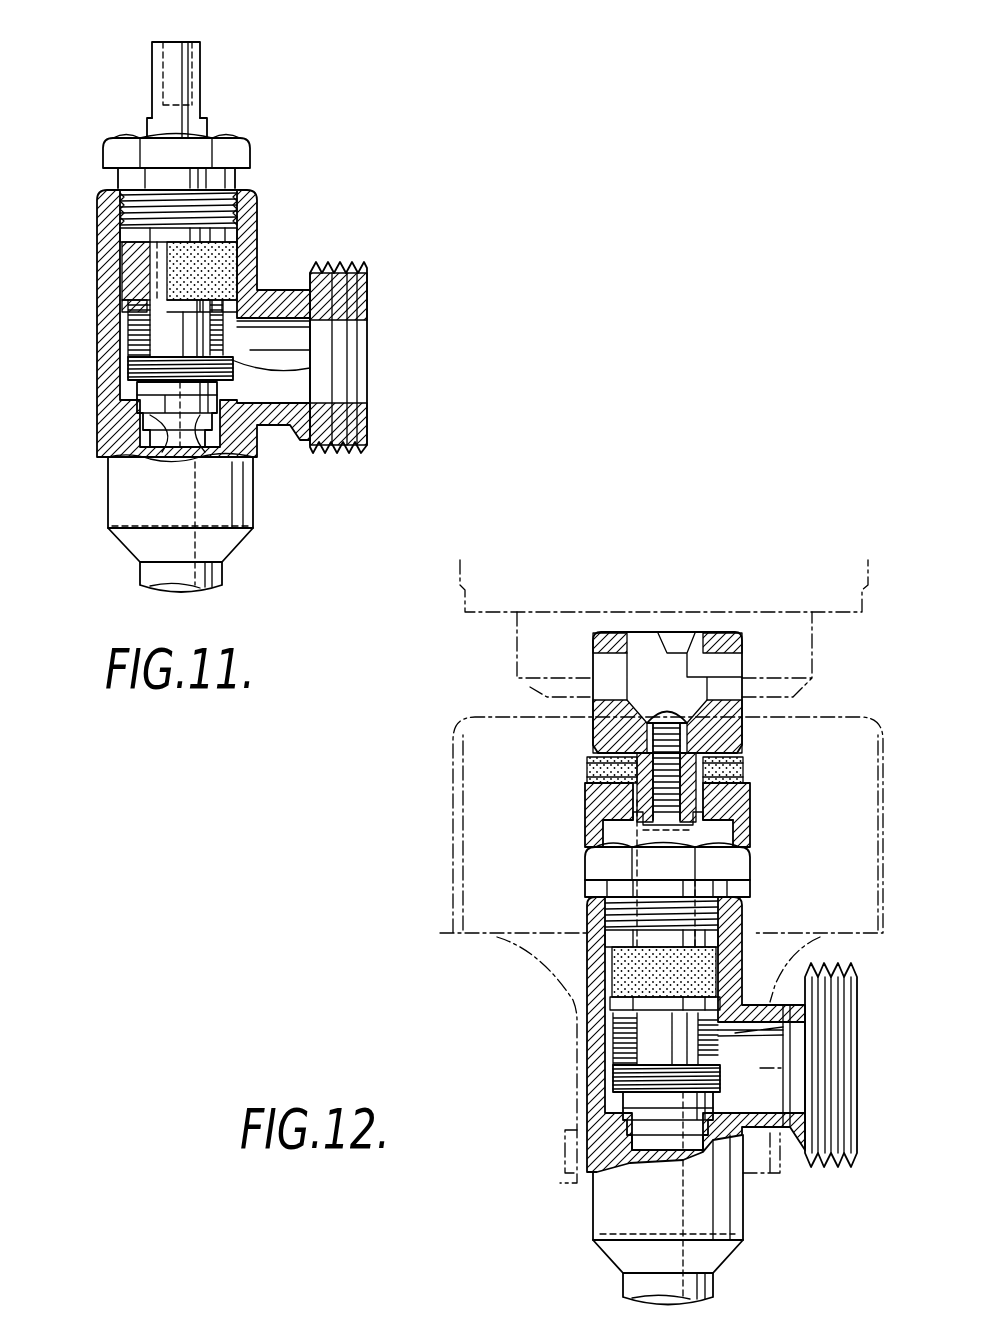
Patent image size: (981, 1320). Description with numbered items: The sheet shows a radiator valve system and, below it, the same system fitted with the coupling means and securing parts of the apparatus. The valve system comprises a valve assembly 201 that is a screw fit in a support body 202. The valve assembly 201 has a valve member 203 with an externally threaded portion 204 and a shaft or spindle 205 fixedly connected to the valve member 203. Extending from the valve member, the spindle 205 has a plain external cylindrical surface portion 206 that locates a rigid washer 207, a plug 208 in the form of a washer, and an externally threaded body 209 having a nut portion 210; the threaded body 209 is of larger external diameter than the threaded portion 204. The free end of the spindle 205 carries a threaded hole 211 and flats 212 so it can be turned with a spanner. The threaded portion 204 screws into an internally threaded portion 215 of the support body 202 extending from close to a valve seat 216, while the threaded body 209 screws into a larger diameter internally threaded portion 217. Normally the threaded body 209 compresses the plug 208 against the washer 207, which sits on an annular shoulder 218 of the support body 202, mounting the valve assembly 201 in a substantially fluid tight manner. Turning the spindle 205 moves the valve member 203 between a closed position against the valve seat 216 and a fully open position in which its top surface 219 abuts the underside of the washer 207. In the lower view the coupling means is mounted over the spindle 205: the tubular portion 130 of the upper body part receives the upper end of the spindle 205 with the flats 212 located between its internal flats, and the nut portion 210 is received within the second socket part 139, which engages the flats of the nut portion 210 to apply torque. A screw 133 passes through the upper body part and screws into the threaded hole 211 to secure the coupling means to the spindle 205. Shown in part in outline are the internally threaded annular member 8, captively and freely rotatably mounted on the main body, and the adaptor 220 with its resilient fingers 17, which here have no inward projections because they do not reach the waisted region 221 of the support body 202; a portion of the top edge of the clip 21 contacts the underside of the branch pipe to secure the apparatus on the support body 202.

In FIG. 11, the valve assembly 201 is at (212, 127).
In FIG. 11, the support body 202 is at (135, 378).
In FIG. 12, the support body 202 is at (697, 1207).
In FIG. 11, the valve member 203 is at (195, 430).
In FIG. 11, the externally threaded portion 204 is at (140, 420).
In FIG. 11, the shaft or spindle 205 is at (255, 337).
In FIG. 12, the shaft or spindle 205 is at (690, 808).
In FIG. 11, the plain external cylindrical surface portion 206 is at (165, 317).
In FIG. 11, the rigid washer 207 is at (243, 285).
In FIG. 11, the plug 208 is at (243, 257).
In FIG. 11, the externally threaded body 209 is at (127, 177).
In FIG. 11, the nut portion 210 is at (240, 155).
In FIG. 12, the nut portion 210 is at (723, 862).
In FIG. 11, the threaded hole 211 is at (187, 42).
In FIG. 11, the flats 212 is at (150, 88).
In FIG. 11, the internally threaded portion 215 is at (130, 345).
In FIG. 11, the valve seat 216 is at (163, 415).
In FIG. 11, the larger diameter internally threaded portion 217 is at (105, 222).
In FIG. 11, the annular shoulder 218 is at (113, 313).
In FIG. 11, the top surface 219 is at (310, 367).
In FIG. 12, the adaptor 220 is at (553, 950).
In FIG. 11, the waisted region 221 is at (236, 549).
In FIG. 12, the waisted region 221 is at (617, 1273).
In FIG. 12, the screw 133 is at (688, 727).
In FIG. 12, the tubular portion 130 is at (630, 794).
In FIG. 12, the second socket part 139 is at (612, 837).
In FIG. 12, the internally threaded annular member 8 is at (475, 903).
In FIG. 12, the resilient fingers 17 is at (577, 1077).
In FIG. 12, the clip 21 is at (565, 1150).